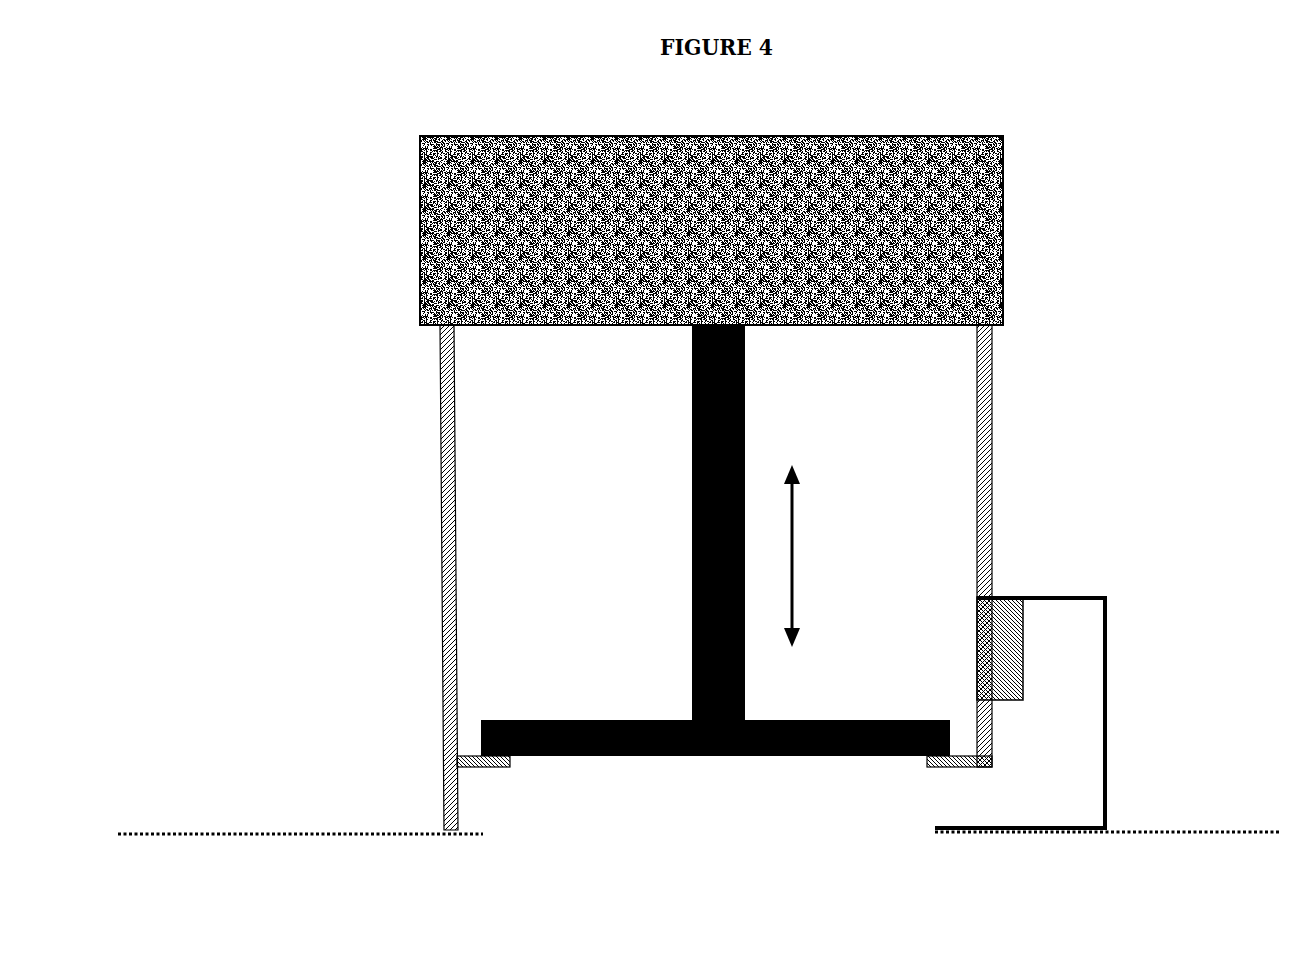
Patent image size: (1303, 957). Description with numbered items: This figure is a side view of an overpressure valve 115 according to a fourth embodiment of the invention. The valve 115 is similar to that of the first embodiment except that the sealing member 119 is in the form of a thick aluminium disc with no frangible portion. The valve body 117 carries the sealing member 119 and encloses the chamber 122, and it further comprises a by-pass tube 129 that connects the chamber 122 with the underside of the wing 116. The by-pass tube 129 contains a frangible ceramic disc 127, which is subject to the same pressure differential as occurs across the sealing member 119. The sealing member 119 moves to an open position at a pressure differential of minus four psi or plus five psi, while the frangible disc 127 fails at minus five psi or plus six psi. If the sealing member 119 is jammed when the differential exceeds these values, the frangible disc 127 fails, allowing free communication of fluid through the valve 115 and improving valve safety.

The overpressure valve 115 is at (339, 191).
The wing 116 is at (267, 824).
The valve body 117 is at (1002, 439).
The sealing member 119 is at (568, 709).
The chamber 122 is at (887, 501).
The frangible ceramic disc 127 is at (1039, 635).
The by-pass tube 129 is at (1126, 761).